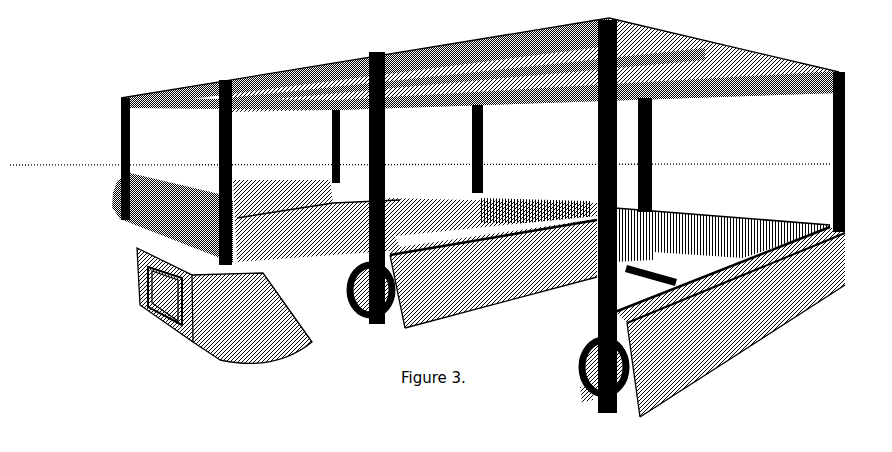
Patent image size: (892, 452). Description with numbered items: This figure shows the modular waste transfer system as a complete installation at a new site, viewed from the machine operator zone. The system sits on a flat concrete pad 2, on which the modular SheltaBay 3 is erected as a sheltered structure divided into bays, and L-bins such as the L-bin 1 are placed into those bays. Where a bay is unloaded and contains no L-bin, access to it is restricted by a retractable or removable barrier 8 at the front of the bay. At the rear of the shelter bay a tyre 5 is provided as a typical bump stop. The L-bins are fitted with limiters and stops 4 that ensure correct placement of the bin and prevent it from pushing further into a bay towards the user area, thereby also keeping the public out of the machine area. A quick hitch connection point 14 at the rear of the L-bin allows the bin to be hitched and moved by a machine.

The L-bin 1 is at (117, 289).
The flat concrete pad 2 is at (539, 298).
The modular SheltaBay 3 is at (480, 61).
The limiters and stops 4 is at (230, 318).
The tyre 5 is at (488, 333).
The retractable/removable barrier 8 is at (483, 216).
The quick hitch connection point 14 is at (166, 318).